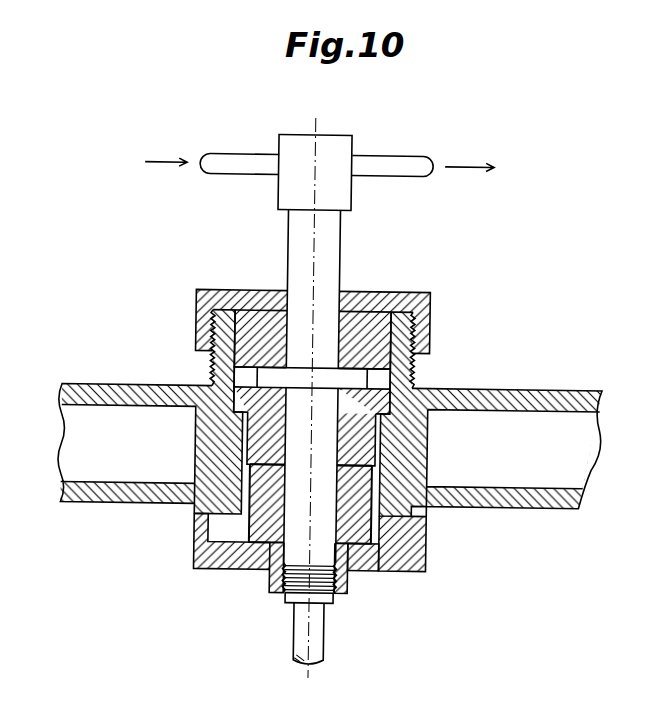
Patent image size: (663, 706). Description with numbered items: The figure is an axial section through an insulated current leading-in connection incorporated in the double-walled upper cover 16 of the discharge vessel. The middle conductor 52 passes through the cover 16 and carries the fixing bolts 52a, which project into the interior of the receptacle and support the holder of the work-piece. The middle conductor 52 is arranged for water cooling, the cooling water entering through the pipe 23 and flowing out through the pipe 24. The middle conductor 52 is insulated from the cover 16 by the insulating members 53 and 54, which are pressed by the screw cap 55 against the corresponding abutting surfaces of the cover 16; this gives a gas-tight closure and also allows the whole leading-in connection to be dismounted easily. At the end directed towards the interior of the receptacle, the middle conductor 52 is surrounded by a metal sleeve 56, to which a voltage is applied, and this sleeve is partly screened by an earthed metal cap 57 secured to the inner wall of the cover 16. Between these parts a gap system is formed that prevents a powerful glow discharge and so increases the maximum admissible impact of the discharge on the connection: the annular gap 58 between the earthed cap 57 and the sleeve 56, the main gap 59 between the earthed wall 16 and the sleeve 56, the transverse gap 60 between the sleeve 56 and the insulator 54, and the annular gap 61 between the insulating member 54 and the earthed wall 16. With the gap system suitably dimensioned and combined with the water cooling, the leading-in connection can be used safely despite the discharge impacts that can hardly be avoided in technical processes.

The double-walled upper cover 16 is at (544, 387).
The pipe 23 is at (226, 155).
The pipe 24 is at (399, 155).
The middle conductor 52 is at (285, 250).
The fixing bolts 52a is at (328, 620).
The insulating member 53 is at (374, 289).
The insulating member 54 is at (234, 378).
The screw cap 55 is at (427, 346).
The metal sleeve 56 is at (372, 544).
The metal cap 57 is at (423, 570).
The annular gap 58 is at (271, 574).
The main gap 59 is at (212, 507).
The transverse gap 60 is at (251, 467).
The annular gap 61 is at (244, 438).